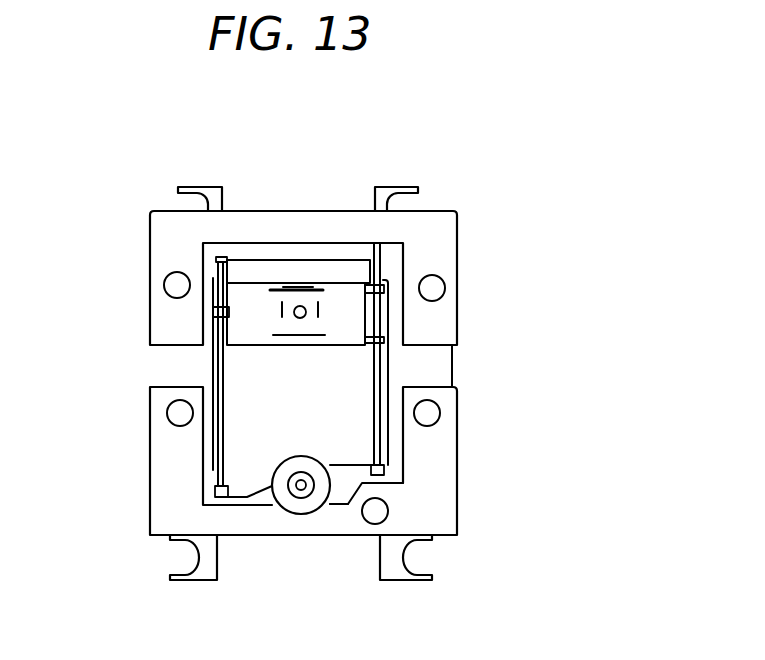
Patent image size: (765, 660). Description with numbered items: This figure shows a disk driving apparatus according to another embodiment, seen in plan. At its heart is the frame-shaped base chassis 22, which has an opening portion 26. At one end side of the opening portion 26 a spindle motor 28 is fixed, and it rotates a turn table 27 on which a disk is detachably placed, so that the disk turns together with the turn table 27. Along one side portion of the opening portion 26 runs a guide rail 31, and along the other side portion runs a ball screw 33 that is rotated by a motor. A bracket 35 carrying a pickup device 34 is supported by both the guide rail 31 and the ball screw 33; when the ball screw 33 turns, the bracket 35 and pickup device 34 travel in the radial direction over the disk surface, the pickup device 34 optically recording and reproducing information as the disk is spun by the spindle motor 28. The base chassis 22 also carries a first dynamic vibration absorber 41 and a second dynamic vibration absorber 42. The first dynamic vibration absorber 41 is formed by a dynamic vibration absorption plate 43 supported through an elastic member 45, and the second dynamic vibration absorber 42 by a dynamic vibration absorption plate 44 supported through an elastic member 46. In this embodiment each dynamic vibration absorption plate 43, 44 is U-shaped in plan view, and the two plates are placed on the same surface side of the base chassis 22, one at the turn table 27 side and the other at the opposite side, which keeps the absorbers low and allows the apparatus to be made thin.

The base chassis 22 is at (433, 377).
The opening portion 26 is at (214, 422).
The turn table 27 is at (302, 480).
The spindle motor 28 is at (274, 498).
The guide rail 31 is at (217, 362).
The ball screw 33 is at (389, 360).
The pickup device 34 is at (300, 318).
The bracket 35 is at (346, 293).
The first dynamic vibration absorber 41 is at (463, 455).
The second dynamic vibration absorber 42 is at (465, 260).
The dynamic vibration absorption plate 43 is at (437, 498).
The dynamic vibration absorption plate 44 is at (438, 220).
The elastic member 45 is at (428, 413).
The elastic member 46 is at (432, 289).